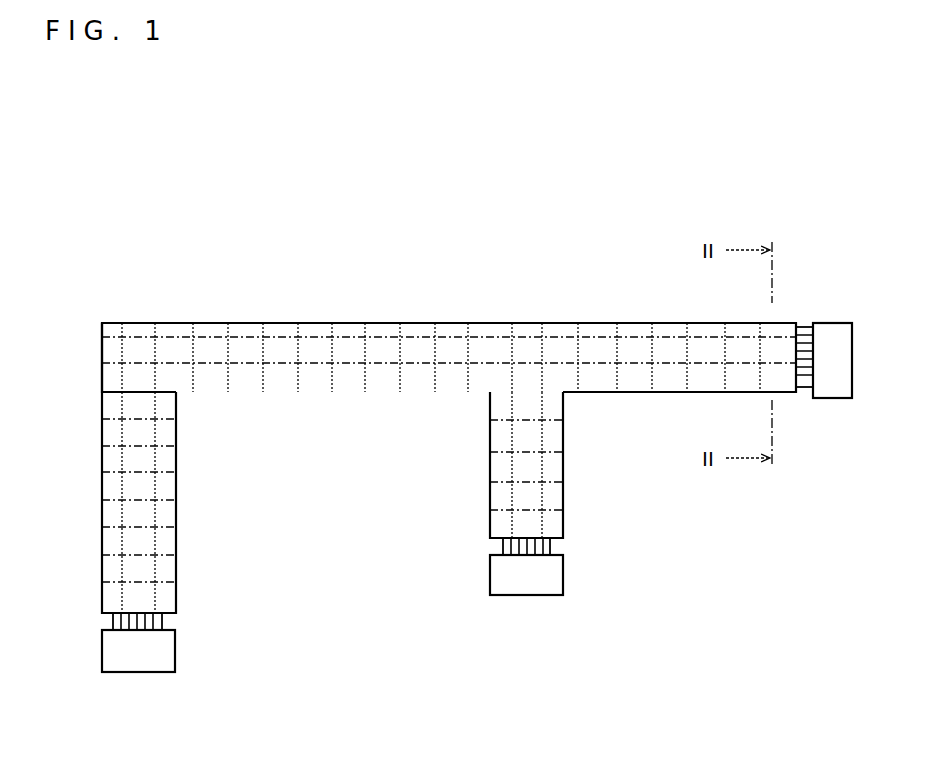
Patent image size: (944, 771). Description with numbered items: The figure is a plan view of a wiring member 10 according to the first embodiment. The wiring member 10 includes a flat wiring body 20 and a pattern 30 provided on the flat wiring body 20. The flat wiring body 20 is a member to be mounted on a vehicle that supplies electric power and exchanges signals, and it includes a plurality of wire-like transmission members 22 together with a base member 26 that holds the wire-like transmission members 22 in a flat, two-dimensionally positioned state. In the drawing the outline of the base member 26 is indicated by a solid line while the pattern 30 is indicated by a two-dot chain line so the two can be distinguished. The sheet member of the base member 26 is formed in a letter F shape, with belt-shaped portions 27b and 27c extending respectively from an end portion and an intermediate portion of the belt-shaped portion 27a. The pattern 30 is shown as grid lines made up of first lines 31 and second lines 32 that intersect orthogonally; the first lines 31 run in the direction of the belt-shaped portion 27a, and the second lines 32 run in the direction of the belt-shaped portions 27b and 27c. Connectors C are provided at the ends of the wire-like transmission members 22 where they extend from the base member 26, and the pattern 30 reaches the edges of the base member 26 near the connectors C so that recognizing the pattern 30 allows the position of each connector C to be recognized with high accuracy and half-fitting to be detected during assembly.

The wiring member 10 is at (131, 153).
The belt-shaped portion 27a is at (346, 323).
The belt-shaped portion 27b is at (176, 488).
The belt-shaped portion 27c is at (563, 462).
The pattern 30 is at (600, 273).
The first lines 31 is at (530, 330).
The second lines 32 is at (618, 340).
The flat wiring body 20 is at (435, 482).
The base member 26 is at (490, 497).
The wire-like transmission members 22 is at (162, 622).
The connector C is at (132, 672).